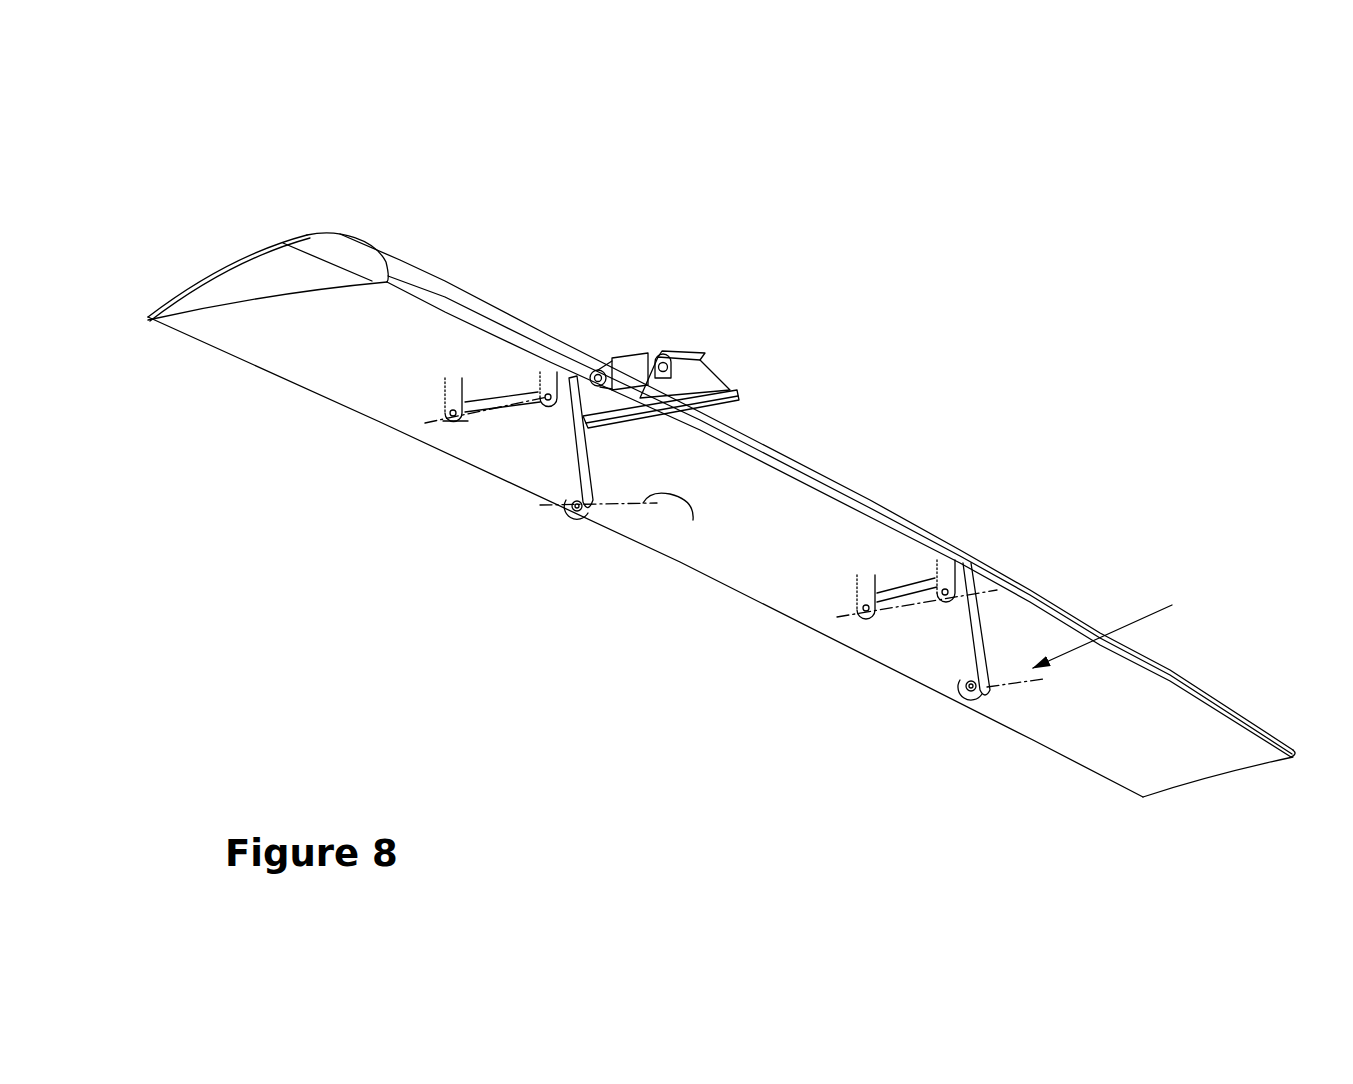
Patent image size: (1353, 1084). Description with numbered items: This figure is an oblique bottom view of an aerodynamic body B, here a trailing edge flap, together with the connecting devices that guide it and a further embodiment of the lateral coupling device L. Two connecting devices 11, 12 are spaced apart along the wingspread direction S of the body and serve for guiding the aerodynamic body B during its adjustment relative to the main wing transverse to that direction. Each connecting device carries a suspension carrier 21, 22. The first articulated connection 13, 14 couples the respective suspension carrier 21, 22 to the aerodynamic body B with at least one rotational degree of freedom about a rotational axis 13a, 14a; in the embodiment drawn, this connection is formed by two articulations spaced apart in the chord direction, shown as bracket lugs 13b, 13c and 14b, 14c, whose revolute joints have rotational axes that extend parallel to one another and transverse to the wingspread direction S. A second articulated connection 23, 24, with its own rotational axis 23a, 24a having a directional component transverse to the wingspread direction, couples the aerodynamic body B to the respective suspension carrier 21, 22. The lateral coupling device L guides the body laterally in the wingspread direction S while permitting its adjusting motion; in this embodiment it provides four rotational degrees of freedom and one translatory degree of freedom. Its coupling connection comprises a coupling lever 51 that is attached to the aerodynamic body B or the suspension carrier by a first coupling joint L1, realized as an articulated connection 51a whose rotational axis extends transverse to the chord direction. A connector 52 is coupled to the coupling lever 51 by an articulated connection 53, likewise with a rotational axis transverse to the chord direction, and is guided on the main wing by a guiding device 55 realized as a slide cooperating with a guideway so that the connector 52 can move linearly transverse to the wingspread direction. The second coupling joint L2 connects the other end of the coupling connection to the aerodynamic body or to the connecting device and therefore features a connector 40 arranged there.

The connecting device 11 is at (455, 665).
The connecting device 12 is at (1007, 623).
The first articulated connection 13 is at (413, 408).
The rotational axis 13a is at (433, 417).
The bracket lug 13b is at (461, 398).
The bracket lug 13c is at (563, 395).
The first articulated connection 14 is at (865, 627).
The rotational axis 14a is at (850, 617).
The bracket lug 14b is at (885, 585).
The bracket lug 14c is at (963, 577).
The suspension carrier 21 is at (552, 462).
The suspension carrier 22 is at (940, 636).
The second articulated connection 23 is at (635, 487).
The rotational axis 23a is at (693, 527).
The second articulated connection 24 is at (972, 700).
The rotational axis 24a is at (960, 689).
The connector 40 is at (600, 430).
The coupling lever 51 is at (640, 367).
The articulated connection 51a is at (598, 371).
The connector 52 is at (740, 372).
The articulated connection 53 is at (660, 357).
The guiding device 55 is at (730, 409).
The aerodynamic body B is at (240, 330).
The lateral coupling device L is at (782, 208).
The first coupling joint L1 is at (700, 366).
The second coupling joint L2 is at (613, 338).
The wingspread direction S is at (1208, 743).